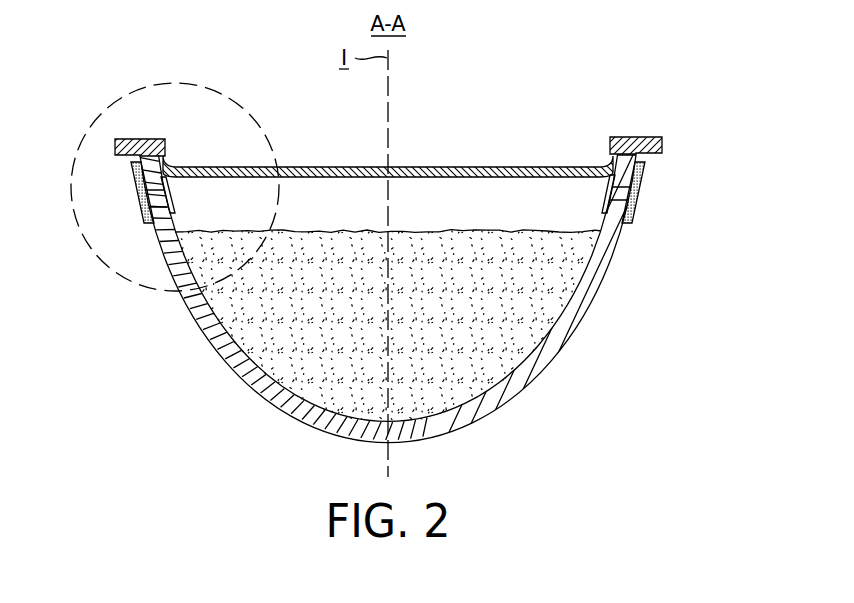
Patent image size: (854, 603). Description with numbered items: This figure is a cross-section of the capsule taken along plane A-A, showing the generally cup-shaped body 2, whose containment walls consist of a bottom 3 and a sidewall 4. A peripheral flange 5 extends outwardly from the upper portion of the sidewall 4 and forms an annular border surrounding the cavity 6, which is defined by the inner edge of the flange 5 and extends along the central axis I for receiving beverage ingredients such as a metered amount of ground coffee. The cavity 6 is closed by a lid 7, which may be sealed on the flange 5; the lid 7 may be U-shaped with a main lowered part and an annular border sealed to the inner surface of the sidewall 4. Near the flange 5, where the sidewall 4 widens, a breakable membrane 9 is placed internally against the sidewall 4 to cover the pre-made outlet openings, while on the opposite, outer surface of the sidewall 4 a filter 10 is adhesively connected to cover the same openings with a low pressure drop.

The body 2 is at (676, 134).
The bottom 3 is at (505, 396).
The sidewall 4 is at (608, 262).
The peripheral flange 5 is at (644, 134).
The cavity 6 is at (505, 218).
The lid 7 is at (447, 160).
The breakable membrane 9 is at (168, 190).
The filter 10 is at (138, 193).